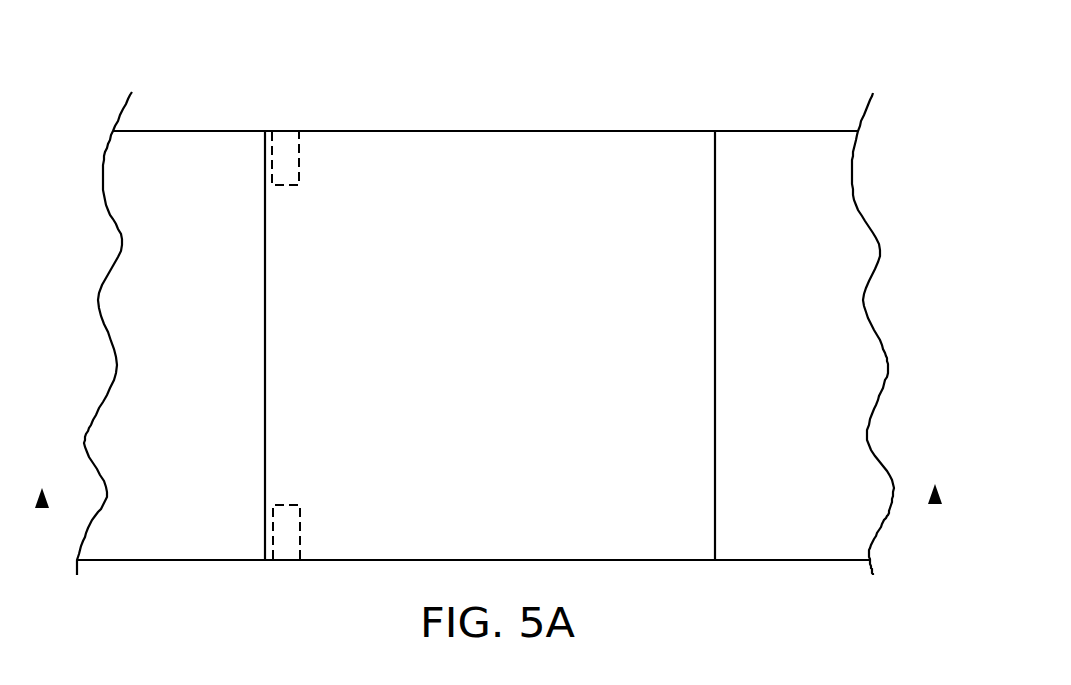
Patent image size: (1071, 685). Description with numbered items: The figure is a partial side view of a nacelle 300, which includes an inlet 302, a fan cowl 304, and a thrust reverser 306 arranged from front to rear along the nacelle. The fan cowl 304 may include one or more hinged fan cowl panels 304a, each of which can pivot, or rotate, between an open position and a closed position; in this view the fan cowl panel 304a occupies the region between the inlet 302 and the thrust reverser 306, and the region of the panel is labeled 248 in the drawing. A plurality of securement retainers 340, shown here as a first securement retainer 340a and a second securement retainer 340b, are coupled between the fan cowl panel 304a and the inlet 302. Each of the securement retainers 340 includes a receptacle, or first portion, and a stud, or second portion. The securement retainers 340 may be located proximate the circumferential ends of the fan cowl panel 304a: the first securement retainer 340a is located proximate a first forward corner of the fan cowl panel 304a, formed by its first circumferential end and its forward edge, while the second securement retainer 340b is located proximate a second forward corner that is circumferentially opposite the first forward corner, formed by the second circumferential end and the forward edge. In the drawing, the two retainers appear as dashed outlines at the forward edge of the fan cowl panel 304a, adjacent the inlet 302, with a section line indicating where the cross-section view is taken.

The nacelle 300 is at (689, 78).
The inlet 302 is at (201, 147).
The fan cowl 304 is at (473, 129).
The fan cowl panel 304a is at (385, 147).
The thrust reverser 306 is at (803, 147).
The middle region 248 is at (521, 516).
The securement retainers 340 is at (385, 275).
The first securement retainer 340a is at (287, 496).
The second securement retainer 340b is at (294, 190).